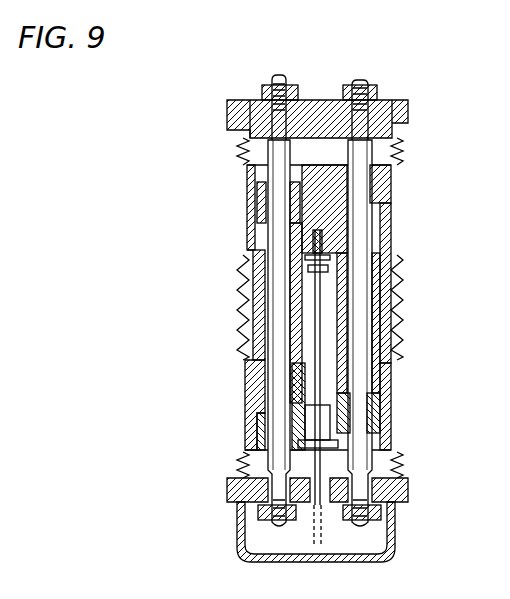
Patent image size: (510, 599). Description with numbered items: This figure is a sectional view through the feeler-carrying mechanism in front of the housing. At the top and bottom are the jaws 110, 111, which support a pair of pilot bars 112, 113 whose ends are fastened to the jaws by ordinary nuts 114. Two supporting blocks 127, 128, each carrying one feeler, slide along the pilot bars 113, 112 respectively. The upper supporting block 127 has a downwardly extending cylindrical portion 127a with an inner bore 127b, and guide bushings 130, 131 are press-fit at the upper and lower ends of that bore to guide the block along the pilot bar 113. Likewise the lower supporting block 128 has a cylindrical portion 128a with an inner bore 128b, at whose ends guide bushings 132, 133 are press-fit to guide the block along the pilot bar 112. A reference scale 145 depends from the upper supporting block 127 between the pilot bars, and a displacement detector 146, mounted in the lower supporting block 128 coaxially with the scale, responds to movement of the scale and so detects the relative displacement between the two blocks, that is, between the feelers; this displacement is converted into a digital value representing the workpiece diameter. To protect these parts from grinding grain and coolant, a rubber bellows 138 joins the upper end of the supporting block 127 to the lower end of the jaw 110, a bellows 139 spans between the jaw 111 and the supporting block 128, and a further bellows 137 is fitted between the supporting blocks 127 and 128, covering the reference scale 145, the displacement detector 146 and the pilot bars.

The jaw 110 is at (410, 124).
The jaw 111 is at (408, 497).
The pilot bar 112 is at (277, 355).
The pilot bar 113 is at (397, 356).
The nuts 114 is at (348, 87).
The supporting block 127 is at (380, 224).
The cylindrical portion 127a is at (377, 282).
The inner bore 127b is at (390, 317).
The supporting block 128 is at (245, 400).
The cylindrical portion 128a is at (270, 330).
The inner bore 128b is at (267, 305).
The guide bushing 130 is at (377, 187).
The guide bushing 131 is at (377, 406).
The guide bushing 132 is at (268, 206).
The guide bushing 133 is at (258, 428).
The bellows 137 is at (240, 258).
The bellows 138 is at (243, 148).
The bellows 139 is at (236, 460).
The reference scale 145 is at (320, 280).
The displacement detector 146 is at (333, 432).